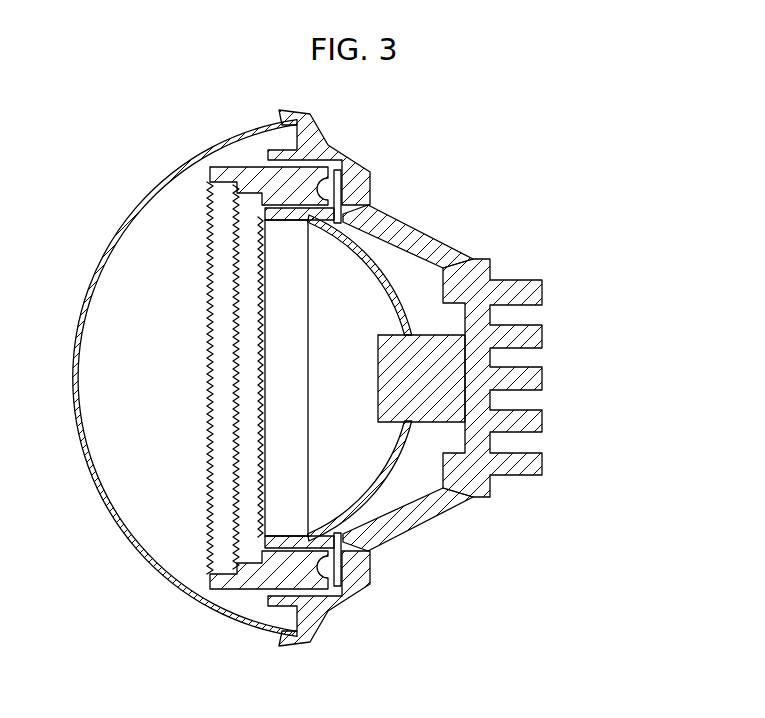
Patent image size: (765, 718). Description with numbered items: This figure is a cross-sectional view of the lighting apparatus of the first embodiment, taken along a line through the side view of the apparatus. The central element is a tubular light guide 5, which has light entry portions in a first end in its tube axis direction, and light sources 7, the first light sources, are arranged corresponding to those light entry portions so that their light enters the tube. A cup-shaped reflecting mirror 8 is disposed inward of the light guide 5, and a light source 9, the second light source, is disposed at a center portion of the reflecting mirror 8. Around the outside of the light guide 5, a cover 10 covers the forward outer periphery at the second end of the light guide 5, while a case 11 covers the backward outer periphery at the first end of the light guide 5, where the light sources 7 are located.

The light guide 5 is at (273, 180).
The light source 7 is at (342, 176).
The reflecting mirror 8 is at (373, 241).
The light source 9 is at (455, 347).
The cover 10 is at (143, 563).
The case 11 is at (412, 532).